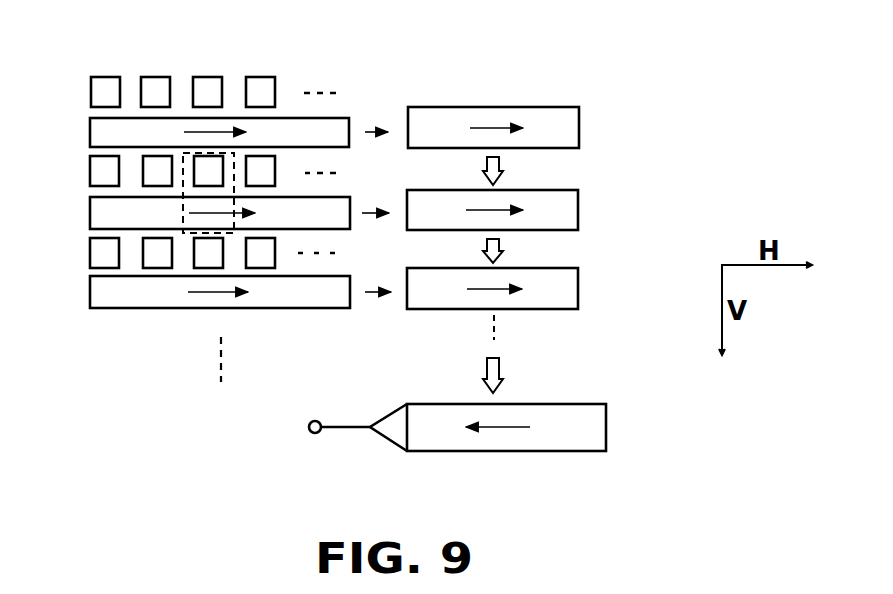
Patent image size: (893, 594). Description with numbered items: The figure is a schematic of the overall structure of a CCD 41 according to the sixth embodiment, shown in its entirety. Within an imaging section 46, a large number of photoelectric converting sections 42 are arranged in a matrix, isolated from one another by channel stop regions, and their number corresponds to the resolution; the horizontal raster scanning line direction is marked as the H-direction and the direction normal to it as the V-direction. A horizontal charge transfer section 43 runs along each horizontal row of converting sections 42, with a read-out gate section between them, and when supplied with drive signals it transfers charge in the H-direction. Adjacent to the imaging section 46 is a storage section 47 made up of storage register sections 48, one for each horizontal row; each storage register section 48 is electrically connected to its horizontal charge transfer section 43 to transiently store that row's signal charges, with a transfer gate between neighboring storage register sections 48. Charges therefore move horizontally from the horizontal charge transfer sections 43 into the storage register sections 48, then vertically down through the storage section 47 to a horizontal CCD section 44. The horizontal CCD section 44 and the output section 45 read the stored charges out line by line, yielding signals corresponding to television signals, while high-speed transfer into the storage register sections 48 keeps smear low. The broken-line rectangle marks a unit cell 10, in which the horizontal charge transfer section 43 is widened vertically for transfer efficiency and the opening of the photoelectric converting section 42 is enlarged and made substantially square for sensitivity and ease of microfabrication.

The unit cell 10 is at (183, 212).
The CCD 41 is at (82, 318).
The photoelectric converting section 42 is at (152, 88).
The horizontal charge transfer section 43 is at (92, 213).
The horizontal CCD section 44 is at (545, 437).
The output section 45 is at (395, 427).
The imaging section 46 is at (288, 80).
The storage section 47 is at (545, 96).
The storage register section 48 is at (560, 202).